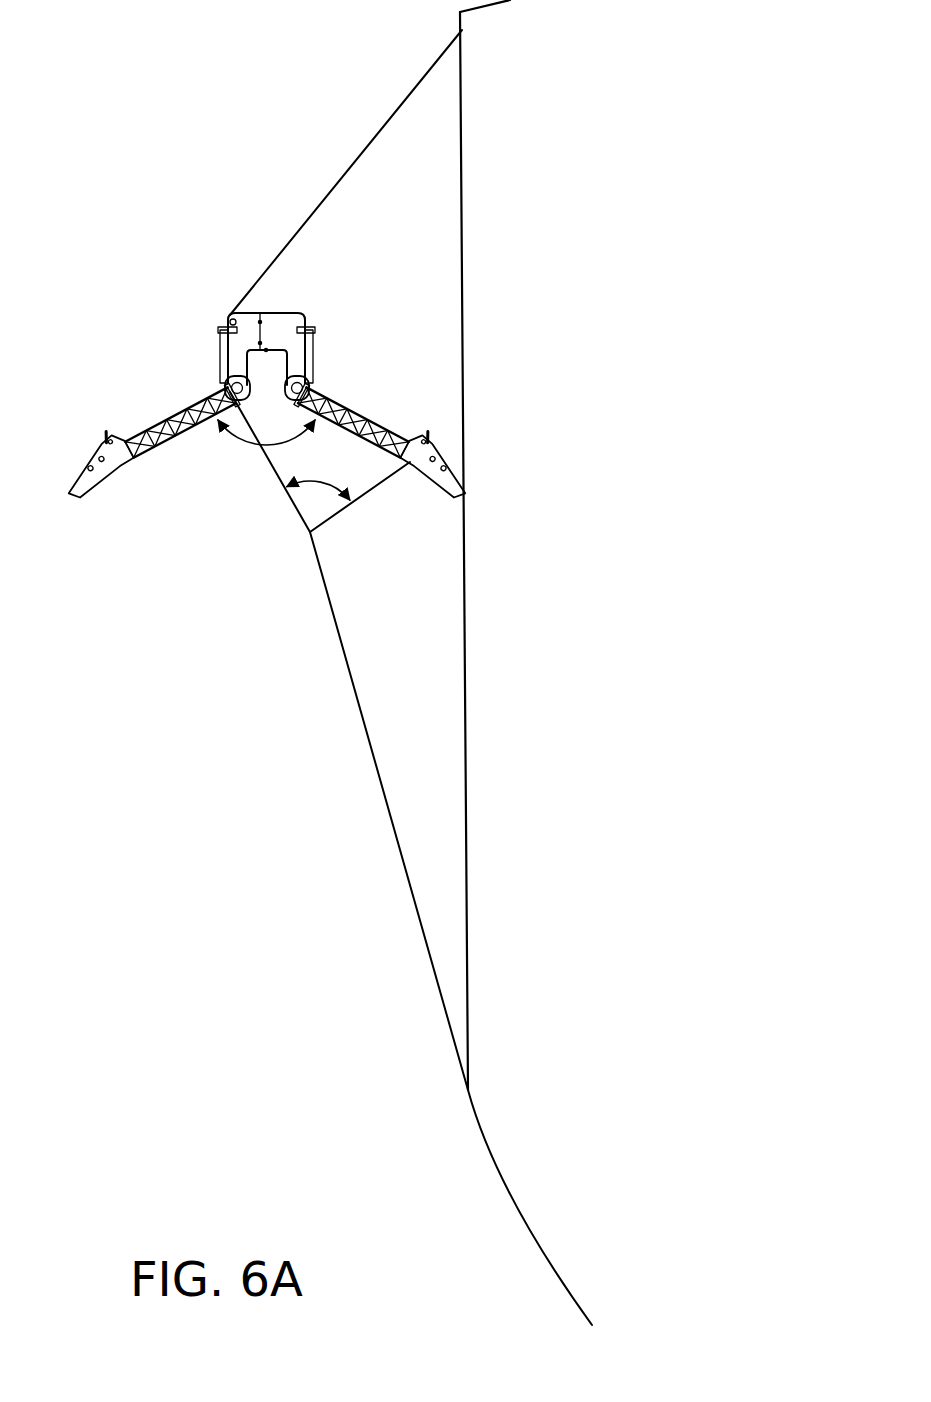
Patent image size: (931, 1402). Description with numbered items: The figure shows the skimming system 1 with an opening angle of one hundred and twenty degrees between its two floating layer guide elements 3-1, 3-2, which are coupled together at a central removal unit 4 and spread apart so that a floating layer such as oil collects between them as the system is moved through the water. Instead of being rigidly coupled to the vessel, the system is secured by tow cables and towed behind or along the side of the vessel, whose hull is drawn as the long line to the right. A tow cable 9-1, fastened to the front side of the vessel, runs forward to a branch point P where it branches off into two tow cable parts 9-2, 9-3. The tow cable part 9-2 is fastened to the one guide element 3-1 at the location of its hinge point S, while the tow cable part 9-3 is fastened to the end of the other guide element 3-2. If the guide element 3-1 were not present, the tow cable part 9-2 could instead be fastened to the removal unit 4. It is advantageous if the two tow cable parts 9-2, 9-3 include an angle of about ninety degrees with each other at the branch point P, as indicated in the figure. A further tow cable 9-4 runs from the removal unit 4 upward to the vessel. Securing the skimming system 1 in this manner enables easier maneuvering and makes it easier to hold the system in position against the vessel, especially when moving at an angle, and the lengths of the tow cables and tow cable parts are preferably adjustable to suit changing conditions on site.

The skimming system 1 is at (462, 233).
The floating layer guide element 3-1 is at (142, 422).
The floating layer guide element 3-2 is at (367, 413).
The removal unit 4 is at (290, 312).
The tow cable 9-1 is at (353, 673).
The tow cable part 9-2 is at (262, 458).
The tow cable part 9-3 is at (377, 493).
The tow cable 9-4 is at (348, 177).
The hinge point S is at (240, 395).
The branch point P is at (313, 533).